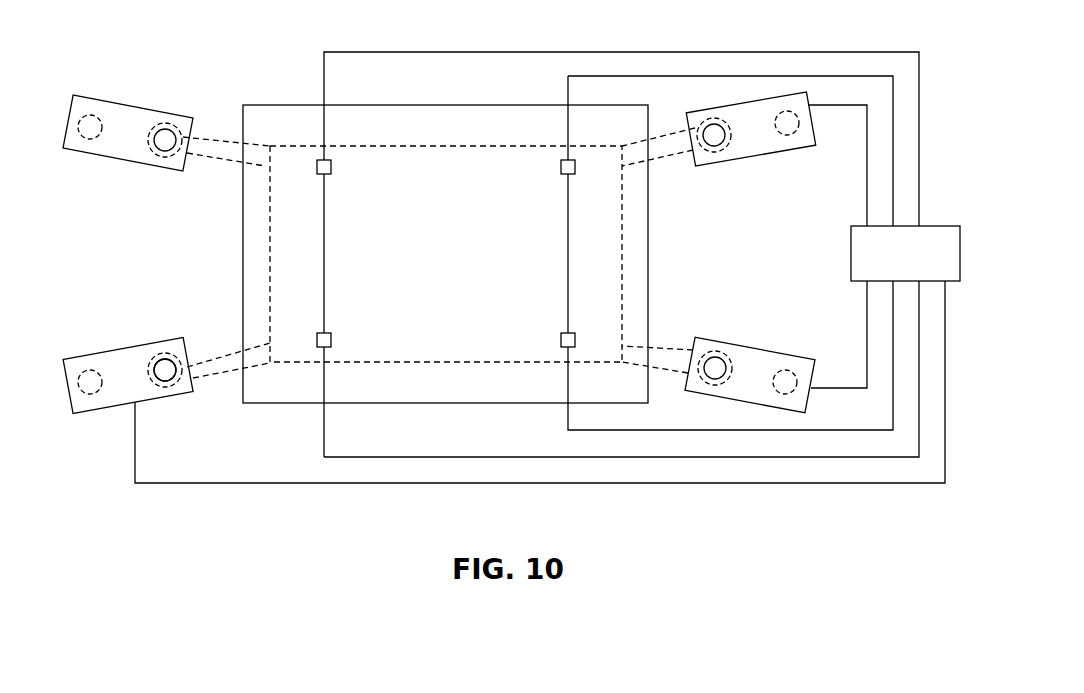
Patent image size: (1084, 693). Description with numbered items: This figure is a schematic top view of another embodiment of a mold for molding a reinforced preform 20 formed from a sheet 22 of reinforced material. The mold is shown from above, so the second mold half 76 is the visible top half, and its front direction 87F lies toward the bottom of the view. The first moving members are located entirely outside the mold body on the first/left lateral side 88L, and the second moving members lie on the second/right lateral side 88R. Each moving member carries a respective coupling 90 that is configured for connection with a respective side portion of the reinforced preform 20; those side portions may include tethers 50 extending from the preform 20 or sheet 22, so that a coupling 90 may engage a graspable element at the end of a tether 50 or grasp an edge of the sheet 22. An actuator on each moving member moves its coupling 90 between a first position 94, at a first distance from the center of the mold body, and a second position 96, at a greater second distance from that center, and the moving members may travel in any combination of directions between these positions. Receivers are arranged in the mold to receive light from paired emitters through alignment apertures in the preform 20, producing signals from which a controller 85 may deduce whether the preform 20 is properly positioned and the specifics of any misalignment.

The reinforced preform 20 is at (379, 254).
The sheet 22 is at (270, 242).
The tether 50 is at (223, 145).
The second mold half 76 is at (467, 262).
The controller 85 is at (920, 266).
The front direction 87F is at (477, 439).
The left side 88L is at (149, 294).
The right side 88R is at (761, 252).
The coupling 90 is at (165, 375).
The first position 94 is at (204, 410).
The second position 96 is at (93, 383).